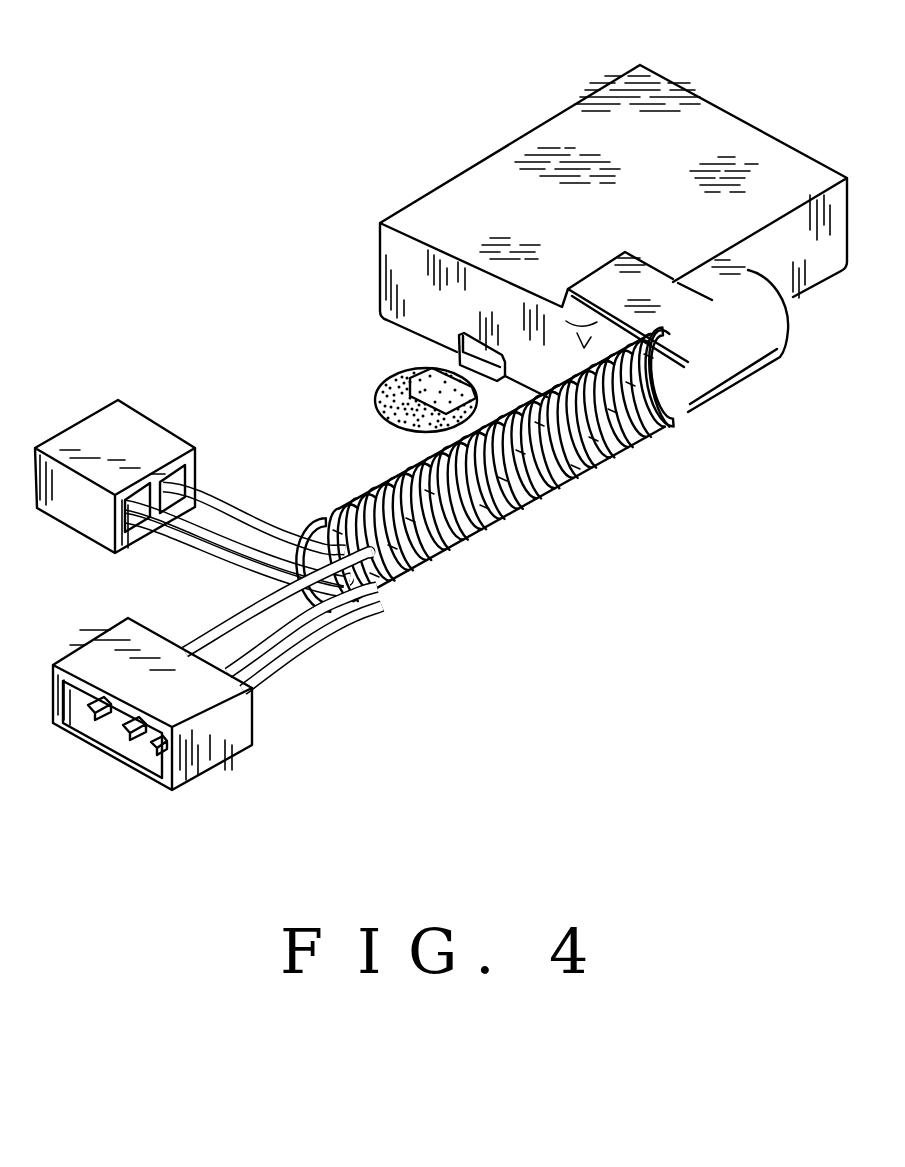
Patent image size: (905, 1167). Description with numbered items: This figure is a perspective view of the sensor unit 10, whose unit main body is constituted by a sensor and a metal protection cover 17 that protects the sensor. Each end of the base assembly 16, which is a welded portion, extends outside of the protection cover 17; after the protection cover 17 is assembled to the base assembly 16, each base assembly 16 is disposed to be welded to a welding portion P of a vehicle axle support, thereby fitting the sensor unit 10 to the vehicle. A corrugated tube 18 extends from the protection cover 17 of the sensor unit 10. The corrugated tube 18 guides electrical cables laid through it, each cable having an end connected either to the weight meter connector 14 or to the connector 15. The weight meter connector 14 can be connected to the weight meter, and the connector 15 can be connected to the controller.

The sensor unit 10 is at (379, 158).
The weight meter connector 14 is at (135, 430).
The connector 15 is at (244, 741).
The base assembly 16 is at (458, 358).
The protection cover 17 is at (701, 118).
The corrugated tube 18 is at (510, 513).
The welding portion P is at (375, 413).